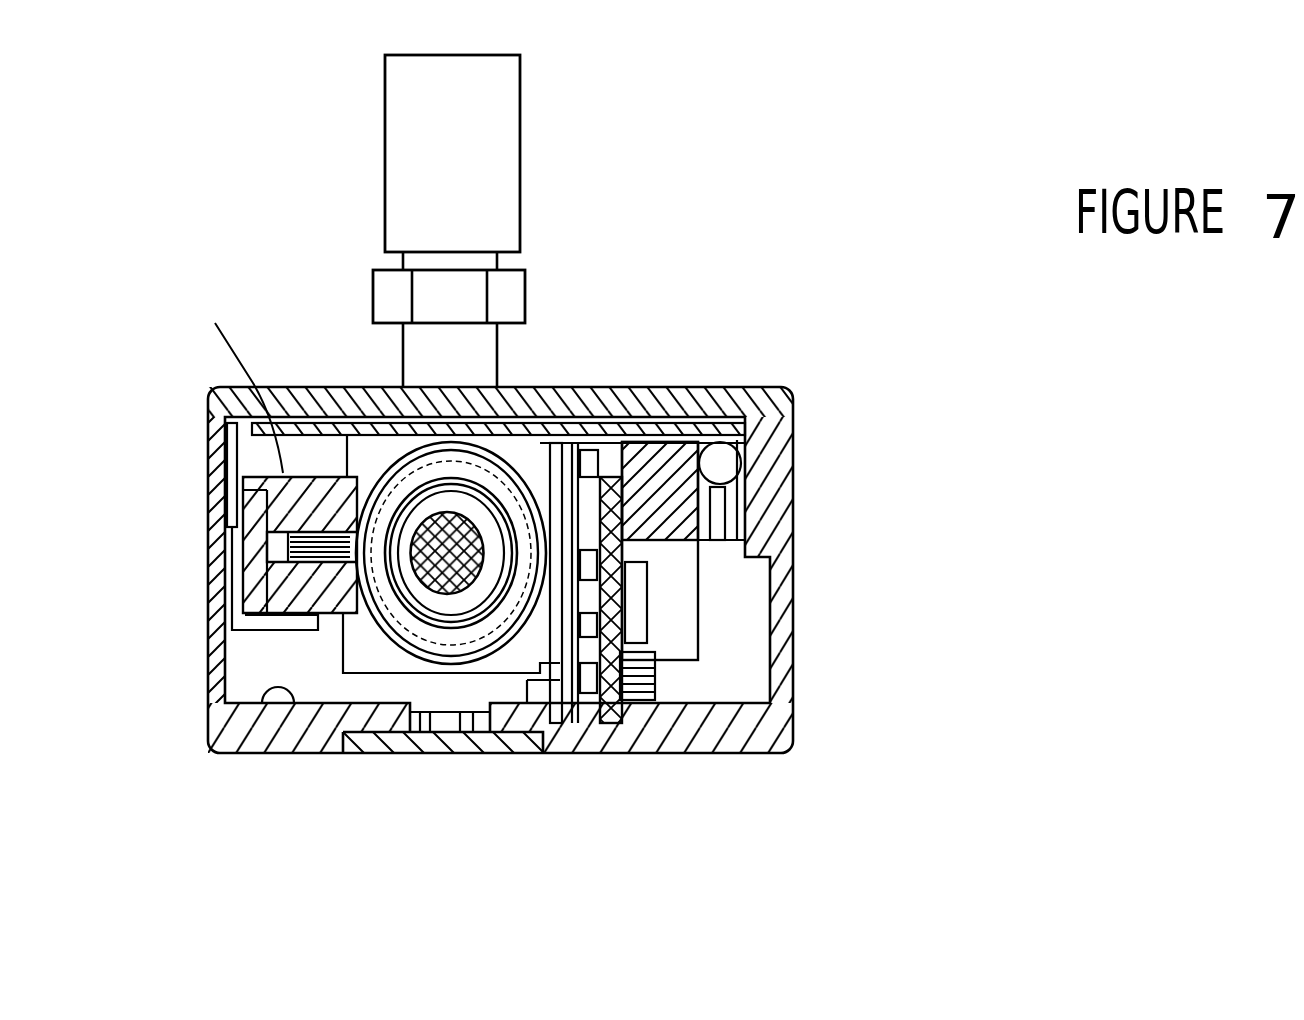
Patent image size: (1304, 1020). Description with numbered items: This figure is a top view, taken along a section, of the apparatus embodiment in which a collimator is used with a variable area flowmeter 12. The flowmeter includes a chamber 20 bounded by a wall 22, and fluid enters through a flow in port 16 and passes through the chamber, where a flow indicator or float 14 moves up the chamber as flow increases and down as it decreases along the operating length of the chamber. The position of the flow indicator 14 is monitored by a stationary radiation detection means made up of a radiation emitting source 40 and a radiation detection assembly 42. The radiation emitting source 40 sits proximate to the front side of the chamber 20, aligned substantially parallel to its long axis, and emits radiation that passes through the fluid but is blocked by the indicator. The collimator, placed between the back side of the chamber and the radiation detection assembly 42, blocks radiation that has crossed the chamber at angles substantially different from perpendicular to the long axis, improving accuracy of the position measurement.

The variable area flowmeter 12 is at (486, 517).
The flow indicator or float 14 is at (483, 560).
The flow in port 16 is at (520, 147).
The chamber 20 is at (484, 519).
The wall 22 is at (393, 640).
The radiation emitting source 40 is at (640, 592).
The radiation detection assembly 42 is at (245, 558).